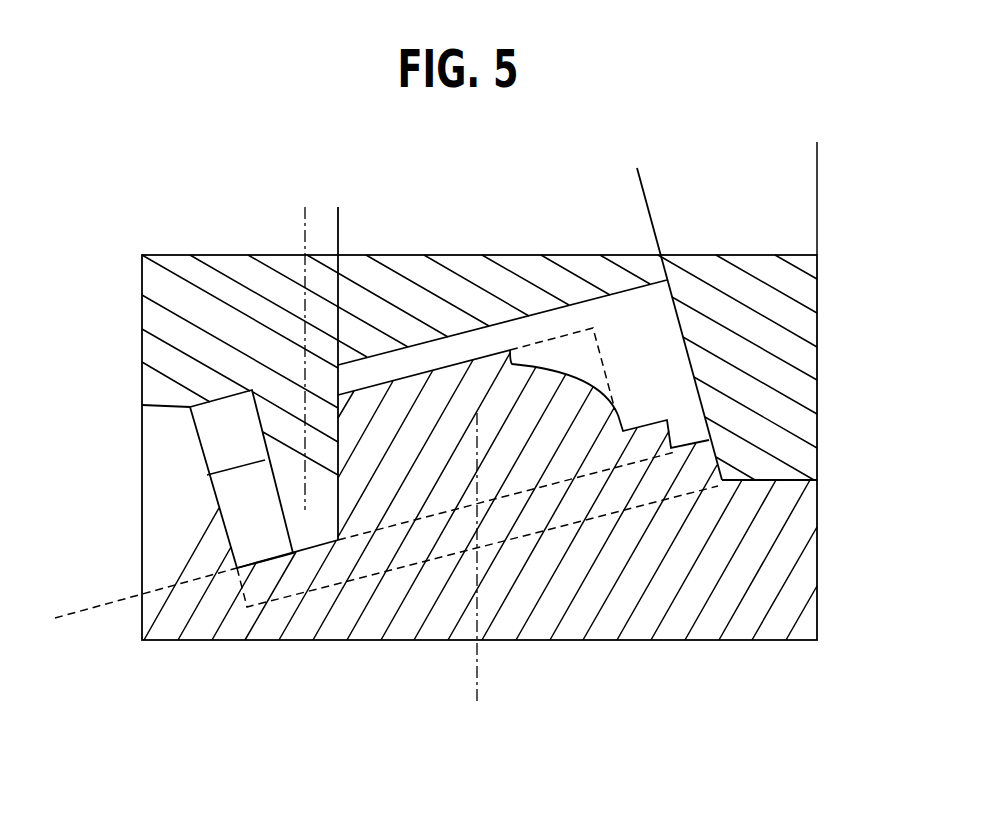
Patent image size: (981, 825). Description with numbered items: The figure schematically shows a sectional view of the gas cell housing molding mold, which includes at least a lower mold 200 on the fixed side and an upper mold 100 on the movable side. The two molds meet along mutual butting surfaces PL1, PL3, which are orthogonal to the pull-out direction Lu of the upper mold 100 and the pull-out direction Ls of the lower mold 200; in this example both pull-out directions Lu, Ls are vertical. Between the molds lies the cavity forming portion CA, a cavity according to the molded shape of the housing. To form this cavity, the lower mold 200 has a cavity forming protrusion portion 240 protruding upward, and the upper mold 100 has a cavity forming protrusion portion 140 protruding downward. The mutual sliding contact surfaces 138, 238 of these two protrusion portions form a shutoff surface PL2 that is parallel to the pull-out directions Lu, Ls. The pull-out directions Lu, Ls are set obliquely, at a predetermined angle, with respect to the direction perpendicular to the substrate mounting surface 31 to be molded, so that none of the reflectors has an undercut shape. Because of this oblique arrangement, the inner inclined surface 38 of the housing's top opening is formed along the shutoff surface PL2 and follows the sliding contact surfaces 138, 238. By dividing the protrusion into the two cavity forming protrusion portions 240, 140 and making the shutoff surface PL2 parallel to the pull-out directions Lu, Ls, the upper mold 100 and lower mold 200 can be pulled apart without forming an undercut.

The upper mold 100 is at (152, 250).
The lower mold 200 is at (155, 643).
The cavity forming protrusion portion 140 is at (207, 475).
The sliding contact surface 138 is at (342, 381).
The sliding contact surface 238 is at (338, 468).
The cavity forming protrusion portion 240 is at (563, 375).
The inner inclined surface 38 is at (338, 226).
The substrate mounting surface 31 is at (90, 610).
The cavity forming portion CA is at (643, 342).
The butting surface PL1 is at (165, 405).
The shutoff surface PL2 is at (338, 490).
The butting surface PL3 is at (781, 480).
The pull-out direction of the upper mold Lu is at (305, 217).
The pull-out direction of the lower mold Ls is at (480, 689).